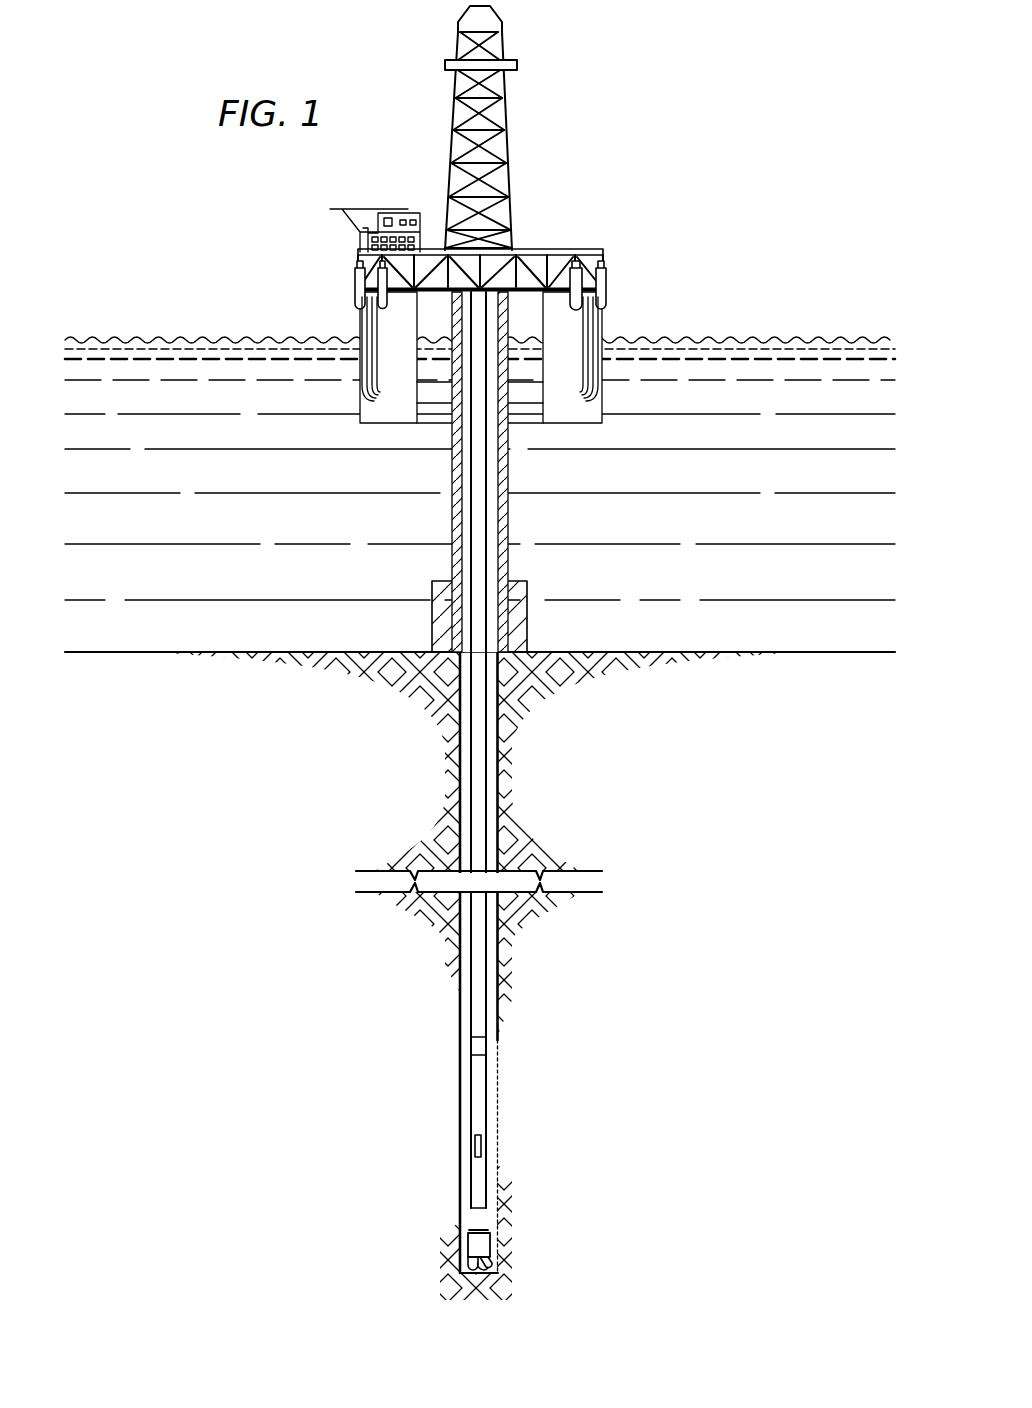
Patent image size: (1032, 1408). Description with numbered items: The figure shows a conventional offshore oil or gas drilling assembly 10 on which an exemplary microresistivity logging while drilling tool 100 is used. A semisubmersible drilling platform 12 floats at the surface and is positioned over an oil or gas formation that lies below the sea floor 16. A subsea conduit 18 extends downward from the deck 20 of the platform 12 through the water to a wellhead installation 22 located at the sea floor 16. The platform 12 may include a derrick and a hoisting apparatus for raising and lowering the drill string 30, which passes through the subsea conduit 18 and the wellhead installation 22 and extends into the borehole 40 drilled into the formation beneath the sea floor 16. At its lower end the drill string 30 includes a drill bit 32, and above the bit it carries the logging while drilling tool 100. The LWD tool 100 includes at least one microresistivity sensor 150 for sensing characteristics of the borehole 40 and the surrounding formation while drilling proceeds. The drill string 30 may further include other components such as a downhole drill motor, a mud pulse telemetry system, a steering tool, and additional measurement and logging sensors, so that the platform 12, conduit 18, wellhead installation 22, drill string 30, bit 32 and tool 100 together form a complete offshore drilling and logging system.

The offshore oil or gas drilling assembly 10 is at (588, 134).
The semisubmersible drilling platform 12 is at (590, 249).
The sea floor 16 is at (757, 652).
The subsea conduit 18 is at (508, 518).
The deck 20 is at (556, 302).
The wellhead installation 22 is at (520, 582).
The drill string 30 is at (485, 455).
The drill bit 32 is at (500, 1259).
The borehole 40 is at (490, 776).
The microresistivity logging while drilling tool 100 is at (468, 1082).
The microresistivity sensor 150 is at (475, 1147).